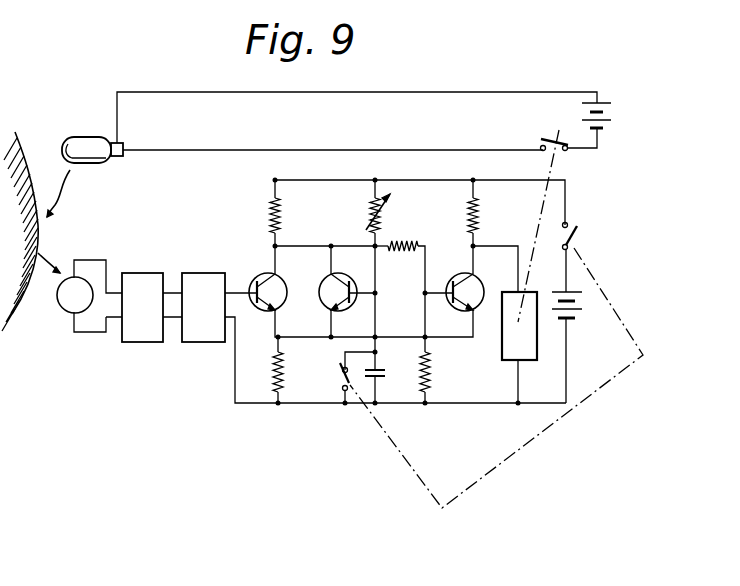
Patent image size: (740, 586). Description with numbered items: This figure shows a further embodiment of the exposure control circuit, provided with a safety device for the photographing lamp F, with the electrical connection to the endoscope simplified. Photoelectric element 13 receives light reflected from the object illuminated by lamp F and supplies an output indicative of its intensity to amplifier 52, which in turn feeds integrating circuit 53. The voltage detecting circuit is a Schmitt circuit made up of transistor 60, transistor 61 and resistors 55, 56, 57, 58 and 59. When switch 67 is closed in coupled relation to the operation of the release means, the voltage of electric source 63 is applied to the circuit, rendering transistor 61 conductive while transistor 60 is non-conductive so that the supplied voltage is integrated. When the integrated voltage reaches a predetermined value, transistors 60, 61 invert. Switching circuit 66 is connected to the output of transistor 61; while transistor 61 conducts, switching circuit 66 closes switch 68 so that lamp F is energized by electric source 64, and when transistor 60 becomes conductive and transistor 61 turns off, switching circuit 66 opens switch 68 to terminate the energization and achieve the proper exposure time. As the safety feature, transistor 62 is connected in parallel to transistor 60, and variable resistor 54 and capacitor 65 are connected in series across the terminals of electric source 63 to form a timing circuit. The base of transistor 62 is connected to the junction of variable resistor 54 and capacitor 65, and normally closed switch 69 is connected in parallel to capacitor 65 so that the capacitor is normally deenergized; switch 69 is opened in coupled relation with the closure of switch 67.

The lamp F is at (78, 137).
The photoelectric element 13 is at (70, 312).
The amplifier 52 is at (140, 342).
The integrating circuit 53 is at (197, 342).
The variable resistor 54 is at (383, 212).
The resistor 55 is at (282, 212).
The resistor 56 is at (480, 212).
The resistor 57 is at (400, 252).
The resistor 58 is at (432, 368).
The resistor 59 is at (272, 368).
The transistor 60 is at (258, 280).
The transistor 61 is at (456, 279).
The transistor 62 is at (325, 285).
The electric source 63 is at (585, 300).
The electric source 64 is at (609, 122).
The capacitor 65 is at (384, 373).
The switching circuit 66 is at (510, 360).
The switch 67 is at (582, 236).
The switch 68 is at (557, 136).
The normally closed switch 69 is at (338, 372).